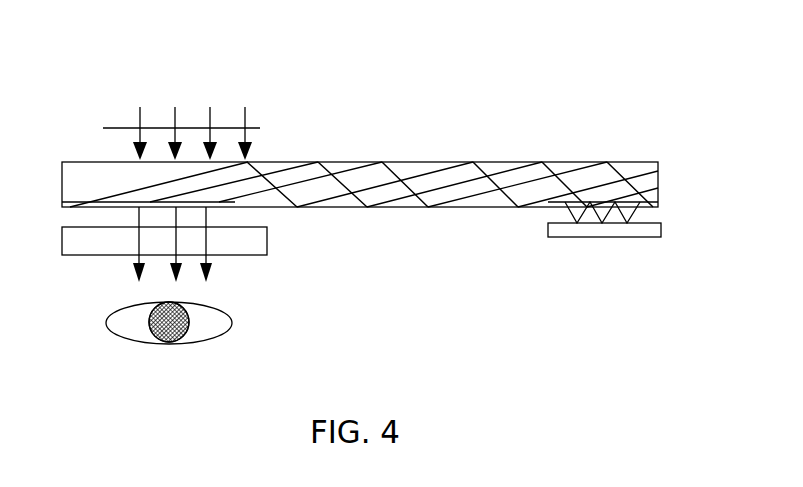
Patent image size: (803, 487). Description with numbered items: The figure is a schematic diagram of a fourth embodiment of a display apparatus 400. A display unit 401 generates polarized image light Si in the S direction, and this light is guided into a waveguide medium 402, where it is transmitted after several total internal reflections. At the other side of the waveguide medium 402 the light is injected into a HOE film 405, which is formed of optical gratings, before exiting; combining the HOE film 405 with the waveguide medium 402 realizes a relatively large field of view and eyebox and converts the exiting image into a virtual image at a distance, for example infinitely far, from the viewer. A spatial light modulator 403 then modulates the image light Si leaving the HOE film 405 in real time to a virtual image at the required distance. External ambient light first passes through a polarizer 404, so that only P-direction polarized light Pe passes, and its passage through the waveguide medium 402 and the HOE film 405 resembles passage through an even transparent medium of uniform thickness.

The optical device 400 is at (393, 72).
The display unit 401 is at (662, 225).
The waveguide medium 402 is at (628, 163).
The spatial light modulator 403 is at (267, 255).
The polarizer 404 is at (260, 128).
The HOE film 405 is at (207, 202).